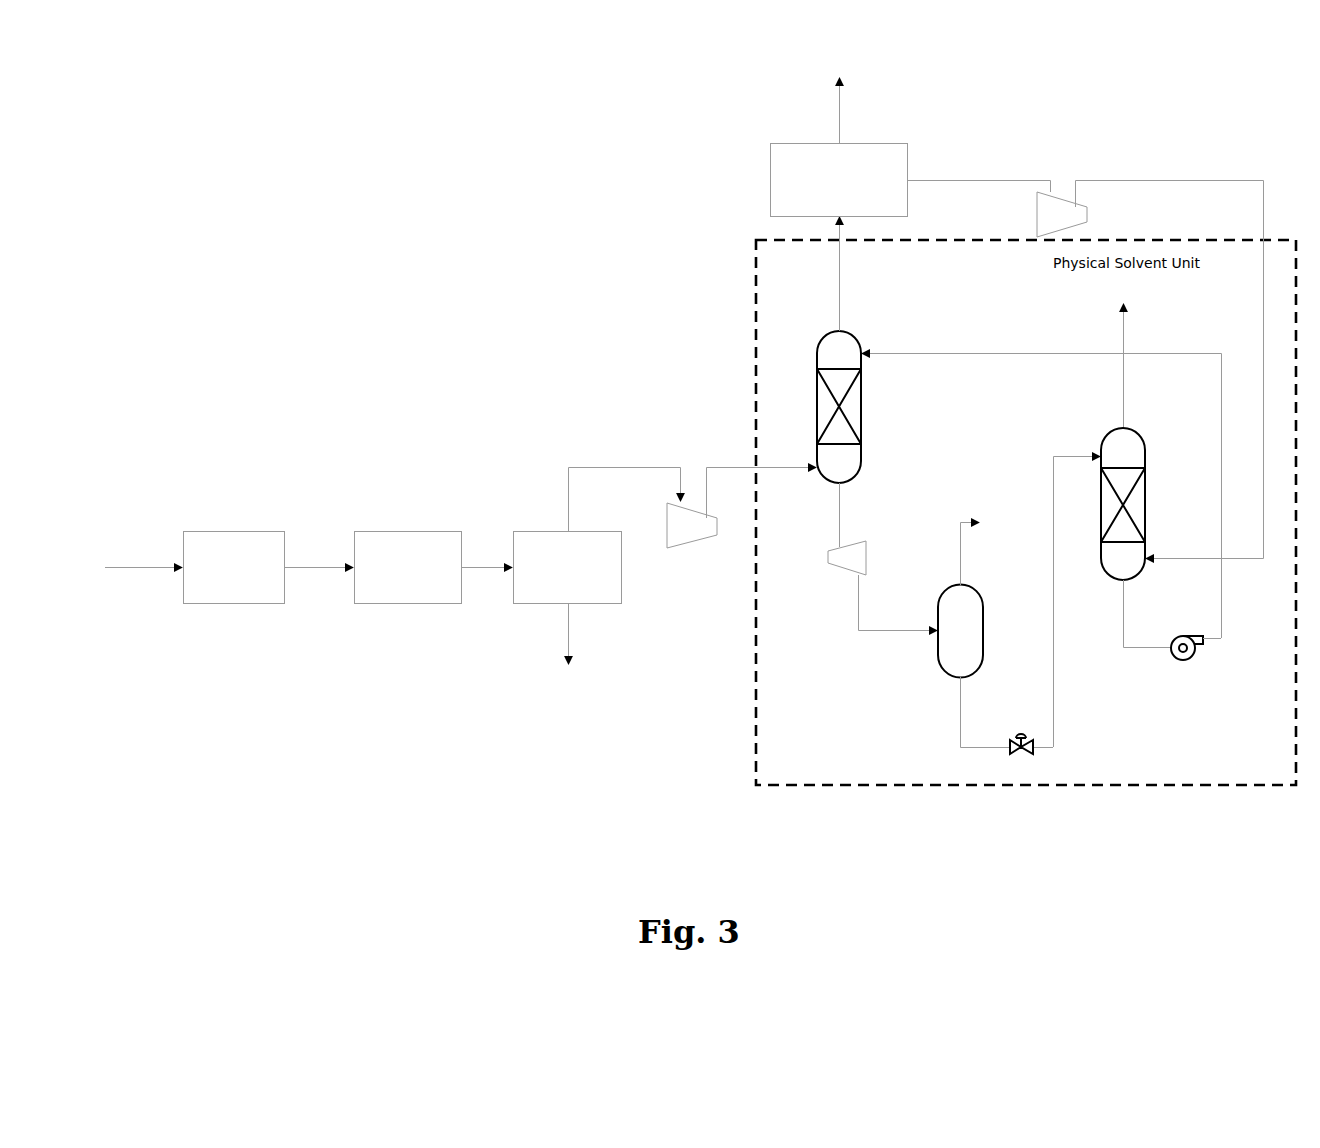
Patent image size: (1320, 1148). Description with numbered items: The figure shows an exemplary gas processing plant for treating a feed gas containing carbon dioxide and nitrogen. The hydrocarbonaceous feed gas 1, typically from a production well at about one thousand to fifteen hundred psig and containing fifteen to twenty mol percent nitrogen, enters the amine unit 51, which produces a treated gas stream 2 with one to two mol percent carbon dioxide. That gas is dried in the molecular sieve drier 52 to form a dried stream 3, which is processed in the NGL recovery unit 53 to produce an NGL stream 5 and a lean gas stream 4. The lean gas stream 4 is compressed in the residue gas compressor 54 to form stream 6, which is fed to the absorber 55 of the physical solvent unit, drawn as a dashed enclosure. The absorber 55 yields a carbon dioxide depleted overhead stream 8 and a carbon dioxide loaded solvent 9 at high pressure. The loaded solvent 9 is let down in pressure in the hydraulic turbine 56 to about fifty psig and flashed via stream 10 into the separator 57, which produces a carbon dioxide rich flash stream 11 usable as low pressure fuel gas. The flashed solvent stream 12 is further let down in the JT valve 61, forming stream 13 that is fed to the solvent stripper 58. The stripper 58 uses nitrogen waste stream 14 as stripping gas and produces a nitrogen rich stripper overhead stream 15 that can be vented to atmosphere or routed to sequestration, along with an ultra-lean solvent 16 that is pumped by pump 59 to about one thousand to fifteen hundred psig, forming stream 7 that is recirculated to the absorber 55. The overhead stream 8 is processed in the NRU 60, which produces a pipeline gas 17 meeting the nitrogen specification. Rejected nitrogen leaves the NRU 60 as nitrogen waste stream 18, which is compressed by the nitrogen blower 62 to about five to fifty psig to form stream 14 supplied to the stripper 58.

The hydrocarbonaceous feed gas 1 is at (158, 569).
The treated gas stream 2 is at (318, 569).
The dried stream 3 is at (488, 569).
The lean gas stream 4 is at (612, 465).
The NGL stream 5 is at (568, 630).
The compressed lean gas stream 6 is at (730, 466).
The recirculated solvent stream 7 is at (1034, 352).
The CO2-depleted feed gas overhead stream 8 is at (841, 314).
The CO2-loaded solvent 9 is at (837, 512).
The flashed solvent stream to separator 10 is at (894, 631).
The CO2 rich flash stream 11 is at (958, 522).
The flashed solvent stream 12 is at (993, 749).
The letdown solvent stream 13 is at (1052, 584).
The N2 waste stream 14 is at (1186, 180).
The N2 rich stripper overhead stream 15 is at (1120, 337).
The ultra-lean solvent 16 is at (1136, 648).
The pipeline gas 17 is at (837, 118).
The N2 waste stream from NRU 18 is at (963, 181).
The amine unit 51 is at (223, 531).
The molecular sieve drier 52 is at (400, 531).
The NGL recovery unit 53 is at (536, 531).
The residue gas compressor 54 is at (693, 545).
The absorber 55 is at (817, 369).
The hydraulic turbine 56 is at (838, 560).
The separator 57 is at (938, 668).
The solvent stripper 58 is at (1101, 448).
The pump 59 is at (1180, 660).
The NRU 60 is at (771, 143).
The JT valve 61 is at (1028, 756).
The nitrogen blower 62 is at (1036, 200).